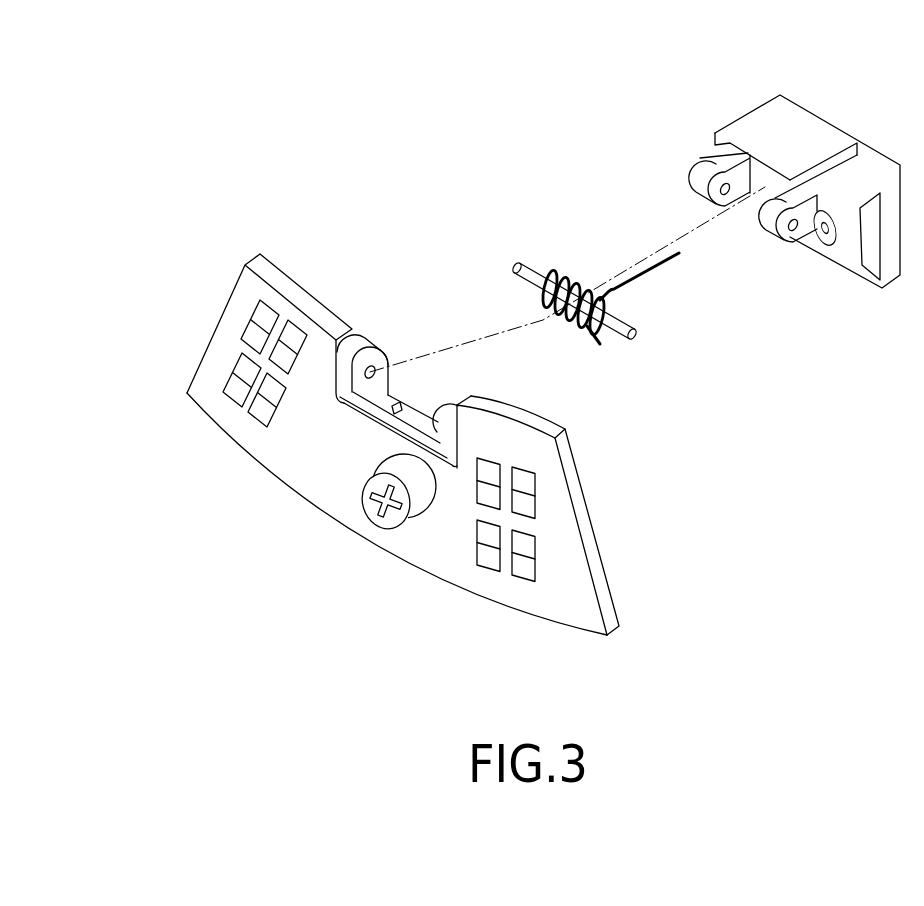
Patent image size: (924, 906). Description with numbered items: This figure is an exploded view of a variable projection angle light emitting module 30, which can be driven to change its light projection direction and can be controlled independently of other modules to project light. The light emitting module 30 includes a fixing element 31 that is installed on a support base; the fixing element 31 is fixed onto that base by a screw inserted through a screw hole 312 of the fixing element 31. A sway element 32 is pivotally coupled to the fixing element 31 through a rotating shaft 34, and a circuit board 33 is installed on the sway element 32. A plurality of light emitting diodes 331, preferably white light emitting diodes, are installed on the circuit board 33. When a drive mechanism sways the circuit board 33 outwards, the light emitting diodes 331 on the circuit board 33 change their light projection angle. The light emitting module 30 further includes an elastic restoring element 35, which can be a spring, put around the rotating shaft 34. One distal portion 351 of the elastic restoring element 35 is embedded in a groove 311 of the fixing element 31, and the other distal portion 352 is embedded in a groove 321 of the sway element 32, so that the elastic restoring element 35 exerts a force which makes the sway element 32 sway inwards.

The light emitting module 30 is at (434, 74).
The fixing element 31 is at (853, 262).
The groove 311 is at (832, 157).
The screw hole 312 is at (828, 233).
The sway element 32 is at (393, 400).
The groove 321 is at (420, 398).
The circuit board 33 is at (300, 298).
The light emitting diodes 331 is at (253, 335).
The rotating shaft 34 is at (610, 343).
The elastic restoring element 35 is at (573, 268).
The distal portion 351 is at (656, 270).
The distal portion 352 is at (593, 344).